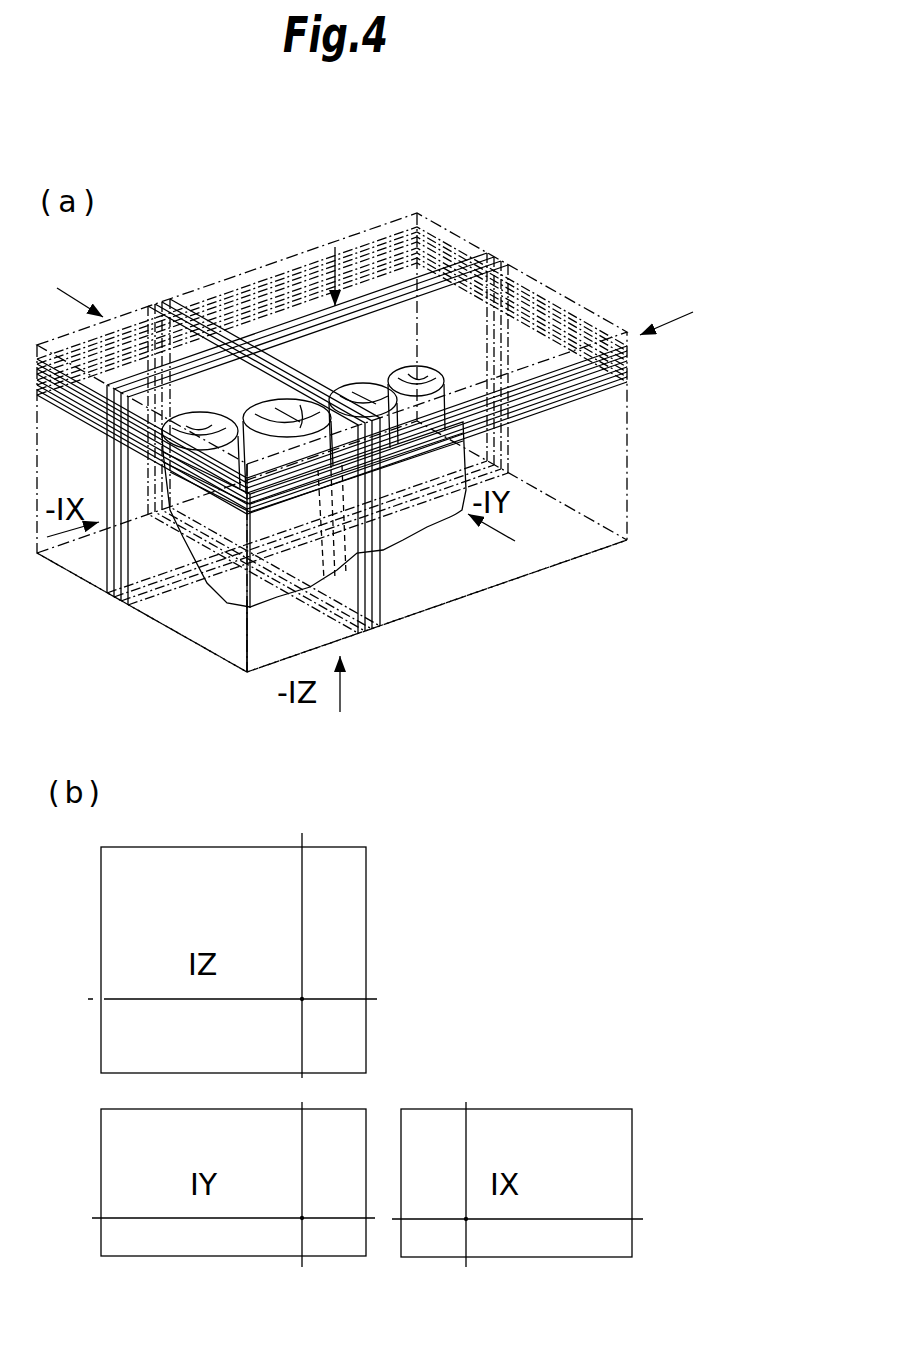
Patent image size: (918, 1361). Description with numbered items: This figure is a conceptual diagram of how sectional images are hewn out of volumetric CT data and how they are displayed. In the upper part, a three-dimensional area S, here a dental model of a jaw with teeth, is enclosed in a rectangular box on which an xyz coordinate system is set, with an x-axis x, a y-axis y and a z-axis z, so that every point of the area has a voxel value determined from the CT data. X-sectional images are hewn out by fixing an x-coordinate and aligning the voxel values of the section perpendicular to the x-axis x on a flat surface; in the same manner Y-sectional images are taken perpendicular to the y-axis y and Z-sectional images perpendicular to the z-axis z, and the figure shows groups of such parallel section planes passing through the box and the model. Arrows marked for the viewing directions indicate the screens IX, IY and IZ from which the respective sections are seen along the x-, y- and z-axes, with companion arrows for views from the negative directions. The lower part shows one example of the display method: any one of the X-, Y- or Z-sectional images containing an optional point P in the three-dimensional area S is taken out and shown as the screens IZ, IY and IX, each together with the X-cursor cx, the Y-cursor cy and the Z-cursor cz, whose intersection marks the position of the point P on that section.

The three-dimensional area S is at (420, 524).
The x-axis x is at (567, 563).
The y-axis y is at (140, 612).
The z-axis z is at (243, 632).
The optional point P is at (303, 1000).
The X-cursor cx is at (300, 872).
The Y-cursor cy is at (348, 998).
The Z-cursor cz is at (183, 1218).
The X-sectional image screen IX is at (666, 312).
The Y-sectional image screen IY is at (86, 290).
The Z-sectional image screen IZ is at (317, 258).